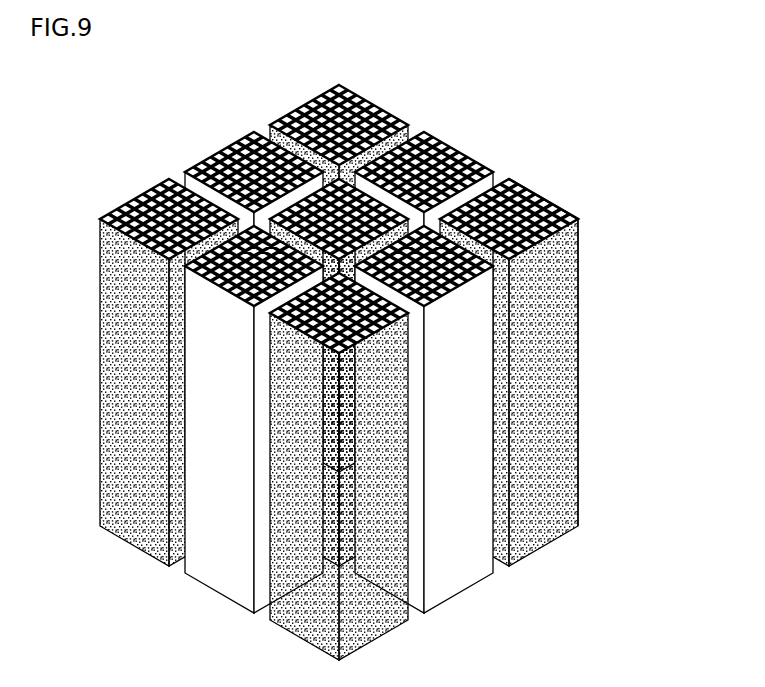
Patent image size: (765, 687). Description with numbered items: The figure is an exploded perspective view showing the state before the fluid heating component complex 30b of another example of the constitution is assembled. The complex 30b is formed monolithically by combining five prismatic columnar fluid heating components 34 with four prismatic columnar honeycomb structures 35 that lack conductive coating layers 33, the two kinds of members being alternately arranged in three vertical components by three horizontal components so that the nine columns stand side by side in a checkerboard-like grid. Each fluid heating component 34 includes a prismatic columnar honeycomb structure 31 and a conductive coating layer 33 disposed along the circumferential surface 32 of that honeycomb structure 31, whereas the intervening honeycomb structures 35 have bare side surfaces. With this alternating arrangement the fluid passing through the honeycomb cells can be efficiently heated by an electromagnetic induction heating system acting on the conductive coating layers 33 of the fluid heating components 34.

The fluid heating component complex 30b is at (395, 360).
The honeycomb structure 31 is at (553, 203).
The circumferential surface 32 is at (578, 221).
The conductive coating layer 33 is at (562, 307).
The fluid heating component 34 is at (395, 360).
The honeycomb structure 35 is at (199, 145).